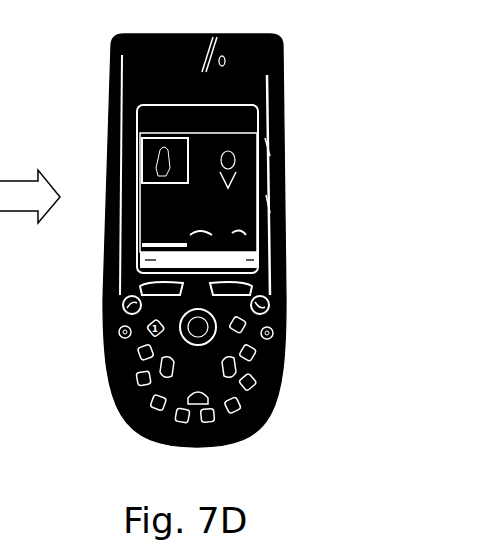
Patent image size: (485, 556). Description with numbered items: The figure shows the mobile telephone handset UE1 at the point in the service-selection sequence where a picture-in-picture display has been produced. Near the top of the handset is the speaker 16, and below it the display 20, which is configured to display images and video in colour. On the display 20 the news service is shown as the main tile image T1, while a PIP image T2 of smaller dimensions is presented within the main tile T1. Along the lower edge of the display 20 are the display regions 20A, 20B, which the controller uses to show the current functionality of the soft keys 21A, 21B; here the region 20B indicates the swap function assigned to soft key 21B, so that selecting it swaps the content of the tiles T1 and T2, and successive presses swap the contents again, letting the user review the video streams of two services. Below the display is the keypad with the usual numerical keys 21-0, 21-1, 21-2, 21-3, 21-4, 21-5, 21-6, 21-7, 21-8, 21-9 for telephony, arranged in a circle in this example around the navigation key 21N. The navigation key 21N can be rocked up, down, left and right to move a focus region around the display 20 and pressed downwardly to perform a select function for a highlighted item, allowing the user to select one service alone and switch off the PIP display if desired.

The speaker 16 is at (214, 36).
The display 20 is at (137, 148).
The display region 20A is at (250, 261).
The display region 20B is at (150, 259).
The soft key 21A is at (255, 285).
The soft key 21B is at (150, 288).
The navigation key 21N is at (172, 337).
The numerical key 21-0 is at (241, 327).
The numerical key 21-1 is at (127, 304).
The numerical key 21-2 is at (152, 359).
The numerical key 21-3 is at (140, 382).
The numerical key 21-4 is at (156, 401).
The numerical key 21-5 is at (180, 428).
The numerical key 21-6 is at (215, 424).
The numerical key 21-7 is at (245, 408).
The numerical key 21-8 is at (255, 388).
The numerical key 21-9 is at (262, 371).
The mobile telephone handset UE1 is at (280, 91).
The main tile image T1 is at (282, 204).
The PIP image T2 is at (282, 147).